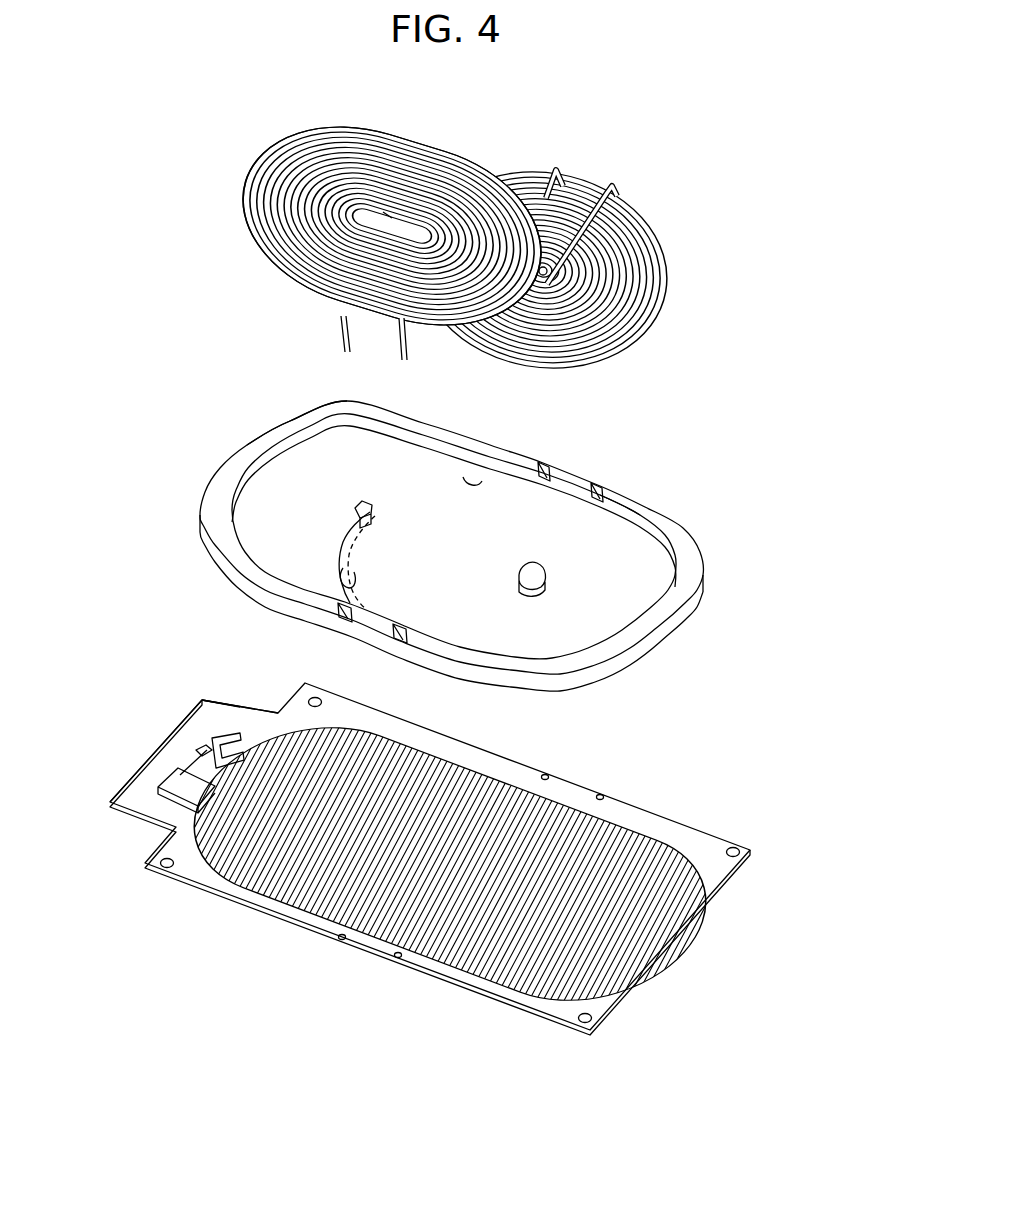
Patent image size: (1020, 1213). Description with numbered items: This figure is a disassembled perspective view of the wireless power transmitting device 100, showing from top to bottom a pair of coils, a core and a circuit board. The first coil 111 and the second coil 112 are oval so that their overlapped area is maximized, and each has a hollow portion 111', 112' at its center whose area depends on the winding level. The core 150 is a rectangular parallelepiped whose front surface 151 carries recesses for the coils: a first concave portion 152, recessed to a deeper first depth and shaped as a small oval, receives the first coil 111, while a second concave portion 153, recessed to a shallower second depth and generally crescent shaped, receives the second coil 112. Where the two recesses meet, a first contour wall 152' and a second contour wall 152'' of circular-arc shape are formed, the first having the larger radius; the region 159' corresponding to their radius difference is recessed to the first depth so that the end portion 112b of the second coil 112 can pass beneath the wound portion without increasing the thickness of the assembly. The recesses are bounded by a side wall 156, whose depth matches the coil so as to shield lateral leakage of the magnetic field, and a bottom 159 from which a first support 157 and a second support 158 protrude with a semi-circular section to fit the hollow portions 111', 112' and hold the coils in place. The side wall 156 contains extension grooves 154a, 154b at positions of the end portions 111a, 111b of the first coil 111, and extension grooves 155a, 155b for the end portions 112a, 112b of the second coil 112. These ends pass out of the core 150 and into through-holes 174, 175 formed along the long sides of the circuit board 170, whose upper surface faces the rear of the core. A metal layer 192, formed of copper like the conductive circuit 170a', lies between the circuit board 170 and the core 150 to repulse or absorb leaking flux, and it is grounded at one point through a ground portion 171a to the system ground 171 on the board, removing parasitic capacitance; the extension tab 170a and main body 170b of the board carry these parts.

The wireless power transmitting device 100 is at (722, 127).
The first coil 111 is at (590, 270).
The hollow portion of the first coil 111' is at (615, 321).
The end portion of the first coil 111a is at (614, 192).
The end portion of the first coil 111b is at (563, 172).
The second coil 112 is at (391, 213).
The hollow portion of the second coil 112' is at (389, 150).
The end portion of the second coil 112a is at (400, 352).
The end portion of the second coil 112b is at (341, 338).
The core 150 is at (690, 505).
The front surface of the core 151 is at (683, 540).
The first concave portion 152 is at (494, 536).
The first contour wall 152' is at (321, 584).
The second contour wall 152'' is at (453, 501).
The second concave portion 153 is at (290, 496).
The extension groove 154a is at (596, 492).
The extension groove 154b is at (548, 472).
The extension groove 155a is at (400, 642).
The extension groove 155b is at (343, 620).
The side wall 156 is at (280, 443).
The first support 157 is at (537, 578).
The second support 158 is at (362, 516).
The bottom 159 is at (681, 544).
The region 159' is at (406, 631).
The circuit board 170 is at (722, 810).
The extension tab of base plate 170a is at (170, 793).
The conductive circuit 170a' is at (200, 695).
The main body of base plate 170b is at (470, 985).
The system ground 171 is at (205, 765).
The ground portion 171a is at (247, 757).
The through-hole 174 is at (600, 797).
The through-hole 175 is at (398, 957).
The metal layer 192 is at (320, 845).